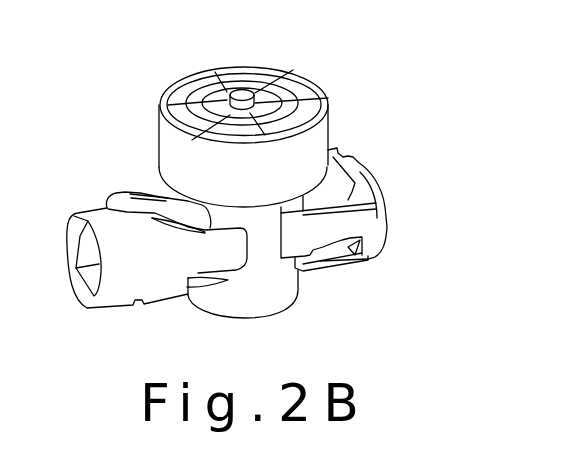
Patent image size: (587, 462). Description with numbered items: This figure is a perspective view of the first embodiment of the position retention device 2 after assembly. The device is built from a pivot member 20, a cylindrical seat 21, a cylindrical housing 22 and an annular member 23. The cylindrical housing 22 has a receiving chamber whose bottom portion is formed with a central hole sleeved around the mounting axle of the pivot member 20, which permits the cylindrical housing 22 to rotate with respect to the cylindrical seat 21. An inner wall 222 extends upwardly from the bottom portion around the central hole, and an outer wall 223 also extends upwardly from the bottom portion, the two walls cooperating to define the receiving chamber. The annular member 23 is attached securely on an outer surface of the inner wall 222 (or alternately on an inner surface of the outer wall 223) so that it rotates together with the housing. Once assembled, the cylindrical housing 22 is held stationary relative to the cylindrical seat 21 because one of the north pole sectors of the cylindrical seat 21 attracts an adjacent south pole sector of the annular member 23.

The position retention device 2 is at (392, 85).
The pivot member 20 is at (246, 90).
The cylindrical seat 21 is at (190, 141).
The cylindrical housing 22 is at (318, 133).
The annular member 23 is at (233, 86).
The inner wall 222 is at (293, 70).
The outer wall 223 is at (165, 92).